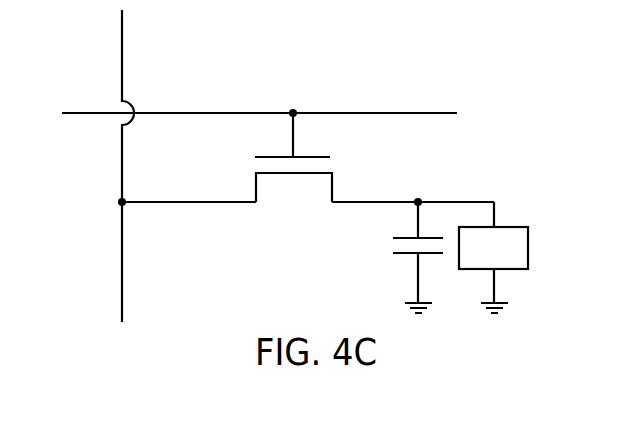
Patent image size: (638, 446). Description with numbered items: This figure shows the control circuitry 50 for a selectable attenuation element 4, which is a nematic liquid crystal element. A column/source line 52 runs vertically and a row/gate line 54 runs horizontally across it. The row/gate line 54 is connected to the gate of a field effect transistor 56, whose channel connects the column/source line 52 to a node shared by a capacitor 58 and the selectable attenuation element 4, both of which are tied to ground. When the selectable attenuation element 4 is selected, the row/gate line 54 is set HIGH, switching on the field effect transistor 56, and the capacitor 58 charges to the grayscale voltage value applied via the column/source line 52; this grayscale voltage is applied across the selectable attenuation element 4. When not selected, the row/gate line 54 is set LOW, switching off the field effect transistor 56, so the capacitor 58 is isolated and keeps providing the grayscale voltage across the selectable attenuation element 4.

The pixel circuit 50 is at (318, 166).
The column/source line 52 is at (122, 52).
The row/gate line 54 is at (84, 112).
The field effect transistor 56 is at (280, 199).
The capacitor 58 is at (394, 267).
The selectable attenuation element 4 is at (528, 247).